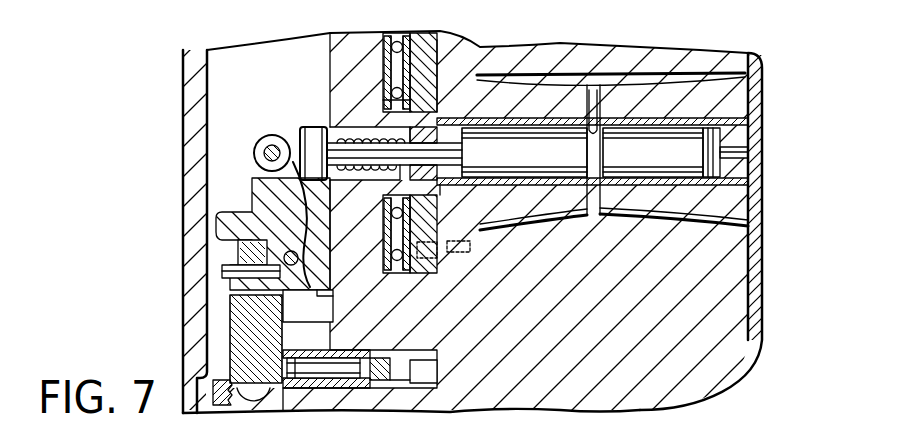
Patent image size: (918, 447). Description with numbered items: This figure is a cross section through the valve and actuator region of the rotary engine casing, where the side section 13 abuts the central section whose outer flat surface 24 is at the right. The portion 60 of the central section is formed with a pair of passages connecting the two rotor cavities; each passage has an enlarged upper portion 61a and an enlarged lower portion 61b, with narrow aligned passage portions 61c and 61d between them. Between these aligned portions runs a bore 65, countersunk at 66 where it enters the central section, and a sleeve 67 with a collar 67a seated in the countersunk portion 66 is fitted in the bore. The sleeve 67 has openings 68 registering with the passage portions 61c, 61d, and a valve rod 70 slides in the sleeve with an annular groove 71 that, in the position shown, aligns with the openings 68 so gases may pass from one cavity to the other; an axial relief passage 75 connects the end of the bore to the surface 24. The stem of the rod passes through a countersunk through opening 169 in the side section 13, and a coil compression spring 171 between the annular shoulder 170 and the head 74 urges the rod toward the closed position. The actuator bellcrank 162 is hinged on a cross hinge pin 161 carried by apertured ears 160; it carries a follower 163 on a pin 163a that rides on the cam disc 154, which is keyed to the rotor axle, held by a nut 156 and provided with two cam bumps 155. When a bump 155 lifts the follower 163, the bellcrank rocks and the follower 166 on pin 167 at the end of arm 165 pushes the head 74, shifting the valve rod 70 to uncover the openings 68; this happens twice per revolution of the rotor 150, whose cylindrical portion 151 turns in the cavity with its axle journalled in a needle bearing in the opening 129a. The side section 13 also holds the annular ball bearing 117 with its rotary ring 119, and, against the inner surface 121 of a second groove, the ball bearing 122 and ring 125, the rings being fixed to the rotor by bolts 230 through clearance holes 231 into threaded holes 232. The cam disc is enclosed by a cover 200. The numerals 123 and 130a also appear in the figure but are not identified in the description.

The side section 13 is at (362, 110).
The flat parallel surface 24 is at (750, 128).
The portion of central section 60 is at (713, 207).
The enlarged portion of passage 61a is at (625, 78).
The enlarged portion of passage 61b is at (622, 235).
The narrow aligned passage portion 61c is at (598, 115).
The narrow aligned passage portion 61d is at (592, 230).
The bore 65 is at (505, 134).
The countersunk portion 66 is at (440, 187).
The sleeve 67 is at (690, 77).
The collar 67a is at (442, 121).
The openings 68 is at (637, 78).
The valve rod 70 is at (723, 170).
The annular groove 71 is at (587, 160).
The head 74 is at (310, 127).
The axial relief passage 75 is at (749, 151).
The annular ball bearing 117 is at (393, 40).
The annular rotary ring 119 is at (420, 60).
The inner surface 121 is at (373, 78).
The annular ball bearing 122 is at (388, 245).
The retainer 123 is at (447, 45).
The annular ring 125 is at (425, 232).
The opening 129a is at (333, 365).
The stop 130a is at (375, 382).
The rotor 150 is at (718, 377).
The cylindrical portion 151 is at (585, 366).
The cam disc 154 is at (245, 322).
The cam bumps 155 is at (230, 293).
The nut 156 is at (213, 392).
The apertured ears 160 is at (323, 282).
The cross hinge pin 161 is at (316, 228).
The actuator bellcrank 162 is at (247, 195).
The follower 163 is at (250, 248).
The pin 163a is at (247, 269).
The arm 165 is at (250, 225).
The follower 166 is at (252, 145).
The pin 167 is at (268, 135).
The countersunk through opening 169 is at (338, 34).
The annular shoulder 170 is at (397, 178).
The coil compression spring 171 is at (340, 125).
The cover 200 is at (182, 87).
The bolts 230 is at (412, 272).
The clearance holes 231 is at (447, 260).
The internally threaded holes 232 is at (463, 245).